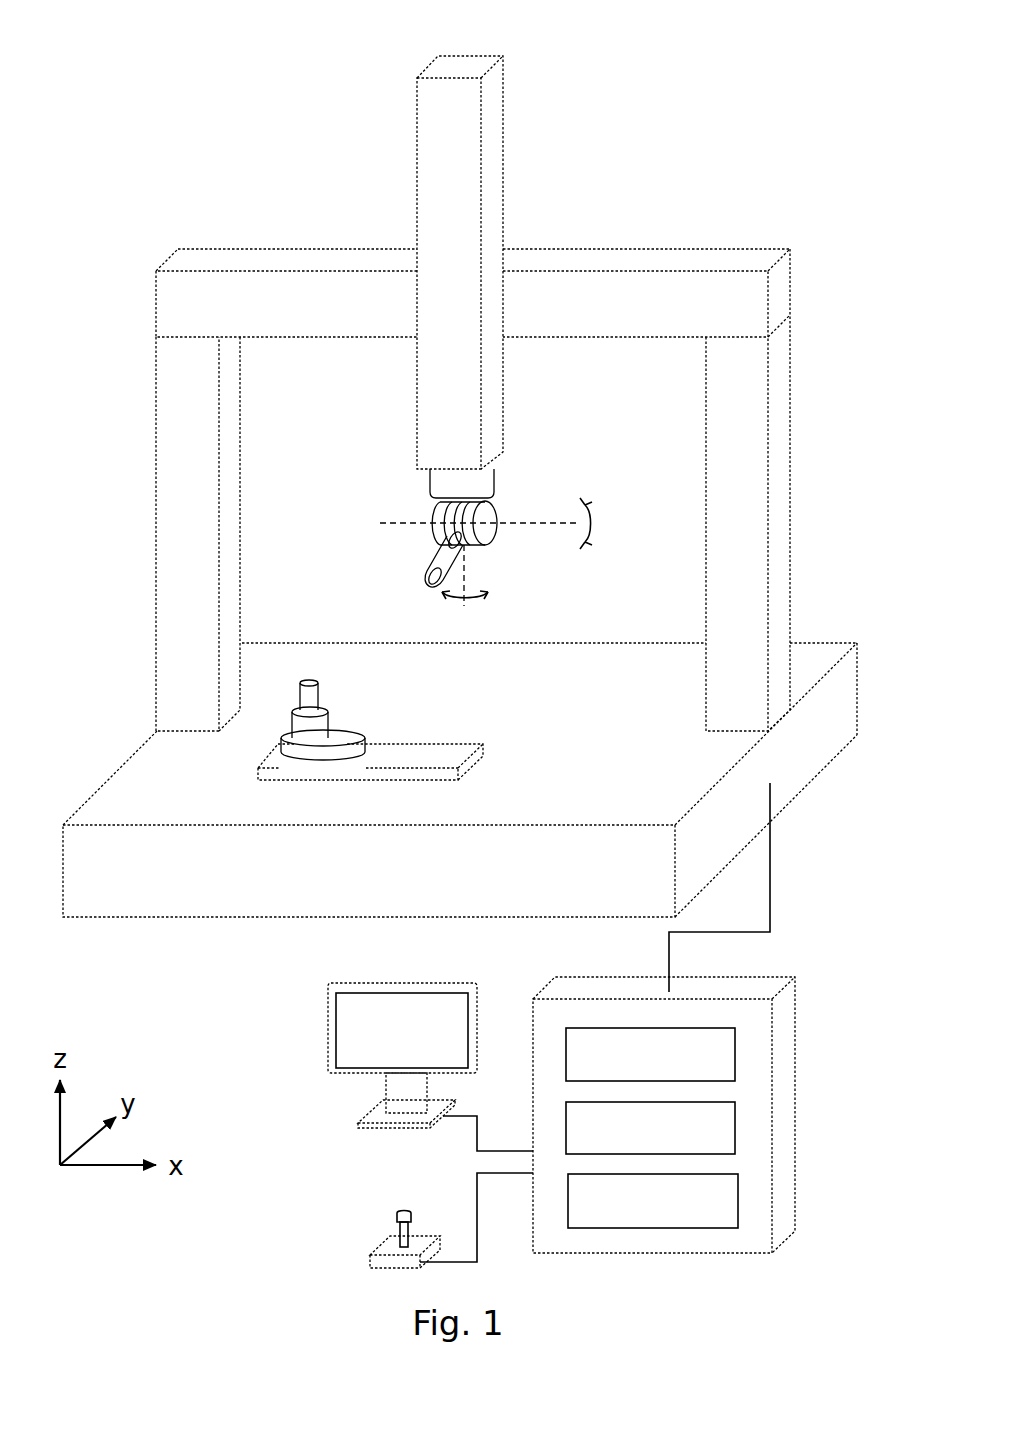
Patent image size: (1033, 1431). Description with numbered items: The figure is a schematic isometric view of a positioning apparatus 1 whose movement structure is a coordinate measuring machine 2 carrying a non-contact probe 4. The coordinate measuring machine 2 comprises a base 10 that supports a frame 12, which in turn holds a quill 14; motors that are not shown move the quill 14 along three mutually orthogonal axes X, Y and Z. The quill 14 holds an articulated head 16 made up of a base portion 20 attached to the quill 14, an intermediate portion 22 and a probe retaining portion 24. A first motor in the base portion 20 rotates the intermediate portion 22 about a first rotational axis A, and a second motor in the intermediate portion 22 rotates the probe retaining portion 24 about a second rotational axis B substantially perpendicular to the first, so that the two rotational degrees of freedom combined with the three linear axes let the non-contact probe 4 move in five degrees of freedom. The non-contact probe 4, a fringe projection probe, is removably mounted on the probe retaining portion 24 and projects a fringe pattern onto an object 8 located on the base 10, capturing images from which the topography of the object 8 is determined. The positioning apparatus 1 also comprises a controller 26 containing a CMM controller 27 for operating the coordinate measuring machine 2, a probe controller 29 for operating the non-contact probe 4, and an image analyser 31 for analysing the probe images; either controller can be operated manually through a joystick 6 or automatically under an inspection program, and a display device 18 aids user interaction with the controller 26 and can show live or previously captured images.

The positioning apparatus 1 is at (86, 92).
The coordinate measuring machine 2 is at (808, 333).
The non-contact probe 4 is at (426, 562).
The joystick 6 is at (356, 1247).
The object 8 is at (258, 745).
The base 10 is at (208, 884).
The frame 12 is at (160, 312).
The quill 14 is at (496, 187).
The articulated head 16 is at (523, 495).
The display device 18 is at (316, 1058).
The base portion 20 is at (436, 488).
The intermediate portion 22 is at (490, 538).
The probe retaining portion 24 is at (430, 539).
The controller 26 is at (785, 1031).
The CMM controller 27 is at (650, 1054).
The probe controller 29 is at (650, 1128).
The image analyser 31 is at (653, 1201).